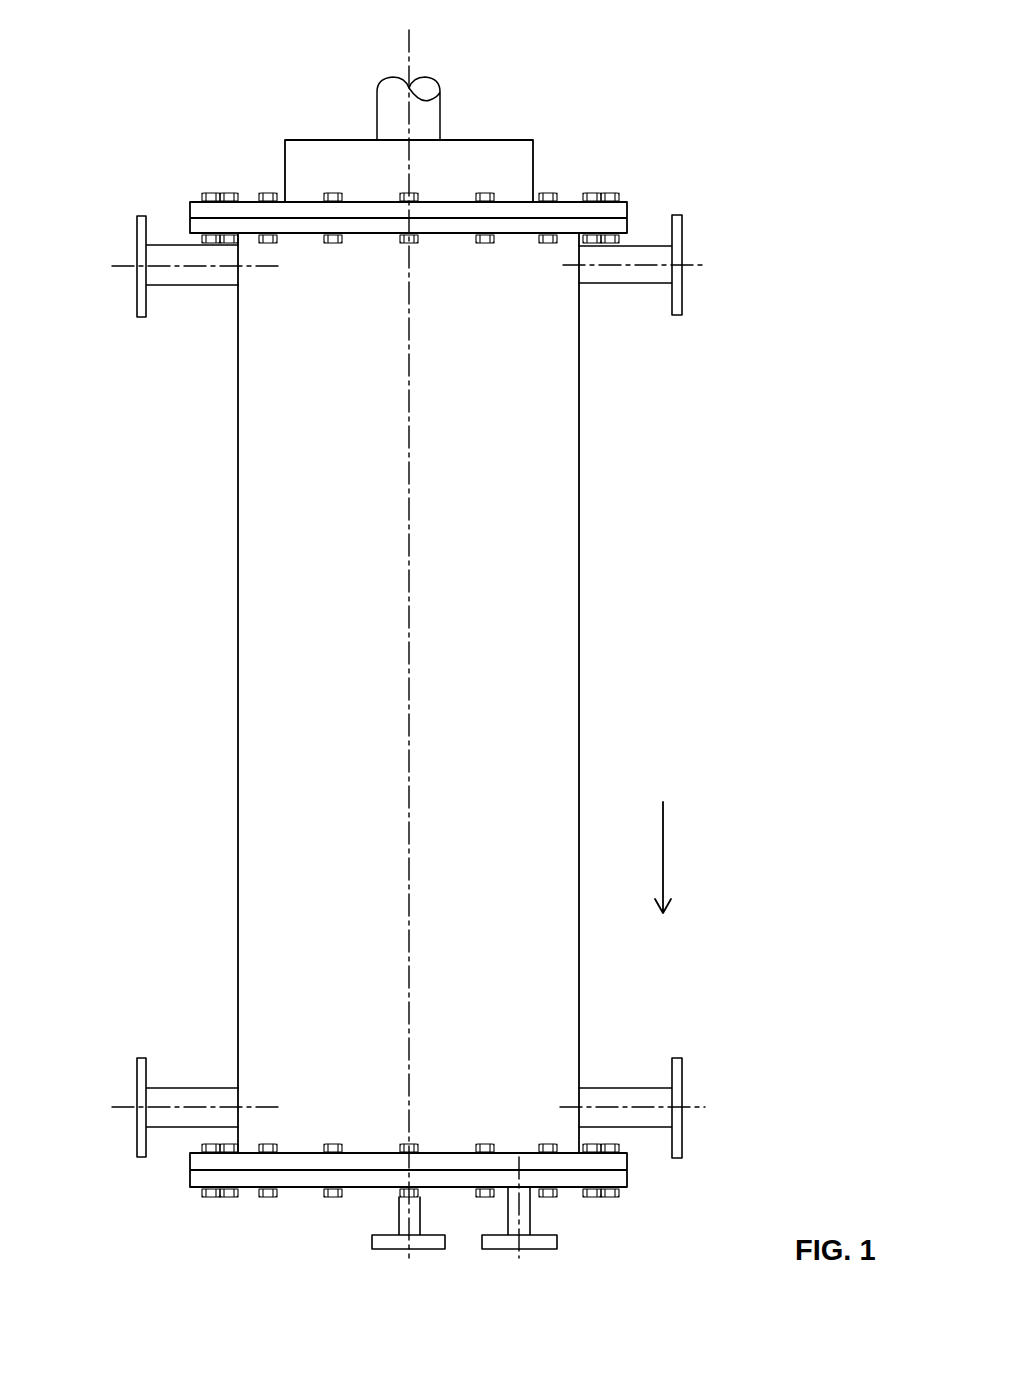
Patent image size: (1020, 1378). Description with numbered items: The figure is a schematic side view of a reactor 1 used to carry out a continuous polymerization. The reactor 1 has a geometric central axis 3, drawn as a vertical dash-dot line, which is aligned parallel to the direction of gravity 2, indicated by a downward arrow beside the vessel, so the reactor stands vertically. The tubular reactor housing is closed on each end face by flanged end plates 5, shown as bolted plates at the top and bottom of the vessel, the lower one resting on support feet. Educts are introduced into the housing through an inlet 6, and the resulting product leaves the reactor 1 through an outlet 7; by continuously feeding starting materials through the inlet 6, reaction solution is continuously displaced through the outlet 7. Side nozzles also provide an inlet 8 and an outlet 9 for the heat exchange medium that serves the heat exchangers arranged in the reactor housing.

The reactor 1 is at (573, 485).
The direction of gravity 2 is at (673, 857).
The geometric central axis 3 is at (408, 62).
The end plates 5 is at (612, 210).
The inlet 6 is at (128, 260).
The outlet 7 is at (153, 1100).
The inlet for heat exchange medium 8 is at (677, 1098).
The outlet for heat exchange medium 9 is at (680, 277).